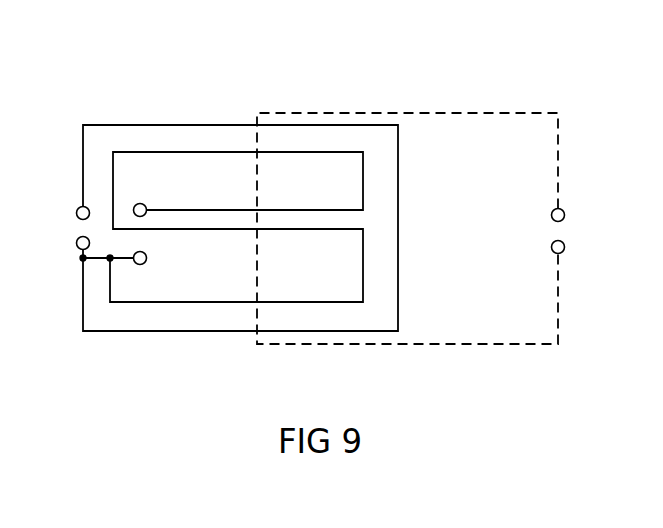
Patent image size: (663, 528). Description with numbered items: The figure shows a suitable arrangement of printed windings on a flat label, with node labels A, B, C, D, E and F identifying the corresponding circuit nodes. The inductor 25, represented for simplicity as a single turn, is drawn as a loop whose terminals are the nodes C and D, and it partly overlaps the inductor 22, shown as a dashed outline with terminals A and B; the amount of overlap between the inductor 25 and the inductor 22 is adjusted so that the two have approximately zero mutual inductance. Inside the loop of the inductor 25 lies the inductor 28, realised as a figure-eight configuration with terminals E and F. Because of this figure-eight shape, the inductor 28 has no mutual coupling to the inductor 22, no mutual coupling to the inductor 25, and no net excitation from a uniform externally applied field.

The inductor 25 is at (131, 125).
The inductor 28 is at (203, 210).
The inductor 22 is at (455, 113).